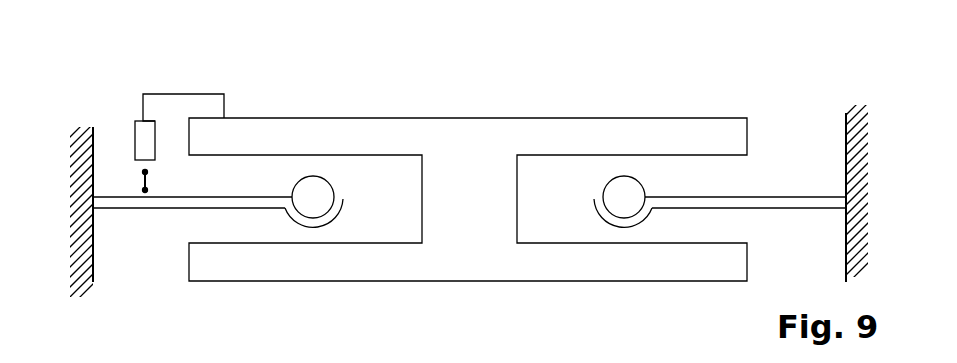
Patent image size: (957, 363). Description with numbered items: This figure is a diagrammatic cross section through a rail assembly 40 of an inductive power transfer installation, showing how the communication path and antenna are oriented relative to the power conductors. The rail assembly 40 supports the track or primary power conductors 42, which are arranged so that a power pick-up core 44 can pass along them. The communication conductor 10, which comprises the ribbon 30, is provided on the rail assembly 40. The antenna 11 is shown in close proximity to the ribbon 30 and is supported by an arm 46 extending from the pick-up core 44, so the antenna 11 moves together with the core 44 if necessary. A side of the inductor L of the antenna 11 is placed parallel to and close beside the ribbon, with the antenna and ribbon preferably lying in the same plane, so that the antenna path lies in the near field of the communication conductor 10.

The communication conductor 10 is at (137, 182).
The antenna 11 is at (128, 119).
The inductor L is at (135, 139).
The ribbon 30 is at (148, 180).
The rail assembly 40 is at (758, 215).
The primary power conductors 42 is at (320, 188).
The power pick-up core 44 is at (468, 252).
The arm 46 is at (185, 93).